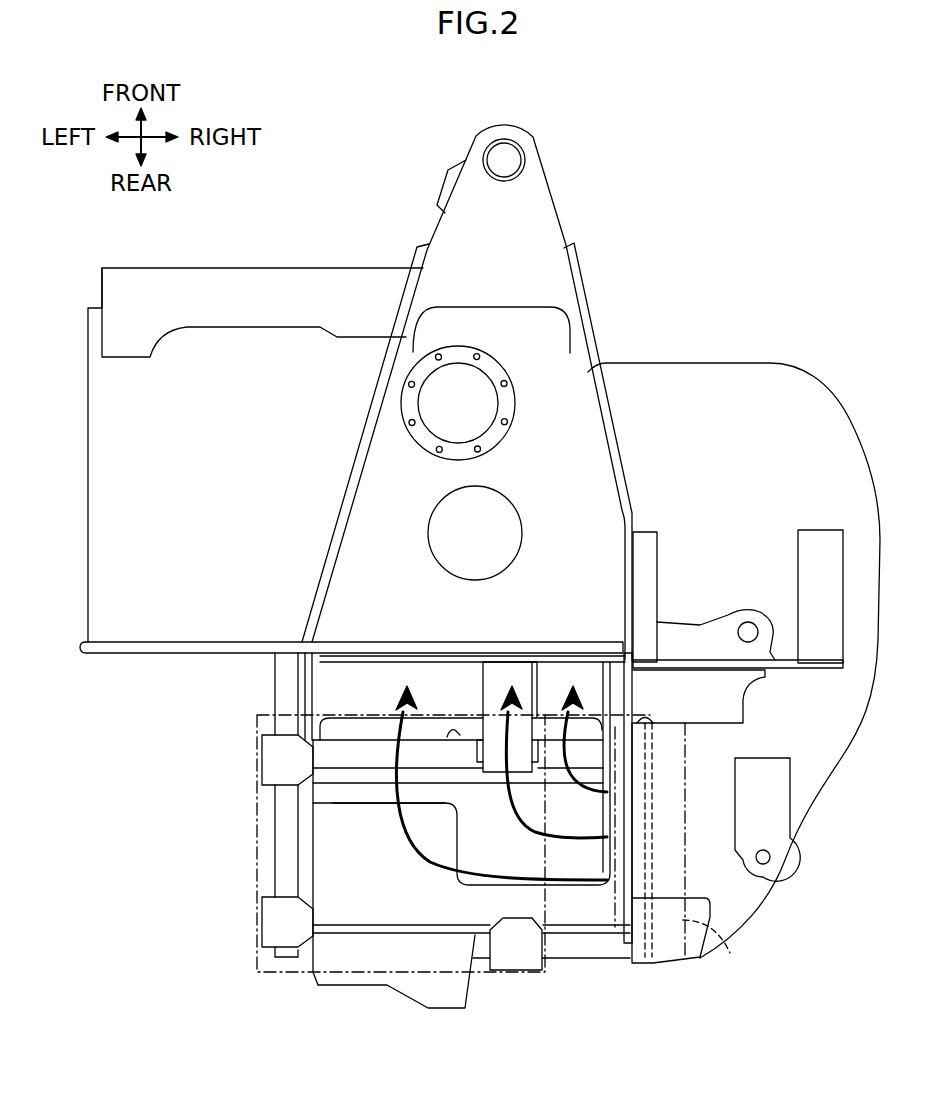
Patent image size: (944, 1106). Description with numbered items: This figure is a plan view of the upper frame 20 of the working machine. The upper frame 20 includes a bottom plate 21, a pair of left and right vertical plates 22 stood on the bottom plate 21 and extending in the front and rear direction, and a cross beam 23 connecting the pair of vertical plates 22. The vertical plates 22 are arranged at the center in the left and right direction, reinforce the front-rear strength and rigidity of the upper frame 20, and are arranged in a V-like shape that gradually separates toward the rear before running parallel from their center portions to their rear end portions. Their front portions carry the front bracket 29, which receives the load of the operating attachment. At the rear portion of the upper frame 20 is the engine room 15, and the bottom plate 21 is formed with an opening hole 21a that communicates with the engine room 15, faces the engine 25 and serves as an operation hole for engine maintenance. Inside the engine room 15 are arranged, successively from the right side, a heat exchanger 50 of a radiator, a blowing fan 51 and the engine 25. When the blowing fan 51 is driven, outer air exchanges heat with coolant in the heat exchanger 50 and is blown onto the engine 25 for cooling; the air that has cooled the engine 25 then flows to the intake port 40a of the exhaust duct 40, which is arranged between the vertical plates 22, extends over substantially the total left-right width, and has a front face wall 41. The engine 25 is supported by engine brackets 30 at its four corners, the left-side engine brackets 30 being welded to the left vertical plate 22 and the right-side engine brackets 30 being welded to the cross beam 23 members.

The engine room 15 is at (572, 903).
The upper frame 20 is at (717, 203).
The bottom plate 21 is at (706, 362).
The opening hole 21a is at (522, 871).
The vertical plate 22 is at (275, 683).
The cross beam 23 is at (390, 650).
The engine 25 is at (257, 858).
The front bracket 29 is at (548, 200).
The engine bracket 30 is at (545, 683).
The exhaust duct 40 is at (372, 806).
The intake port 40a is at (458, 733).
The front face wall 41 is at (342, 652).
The heat exchanger 50 is at (722, 947).
The blowing fan 51 is at (634, 965).